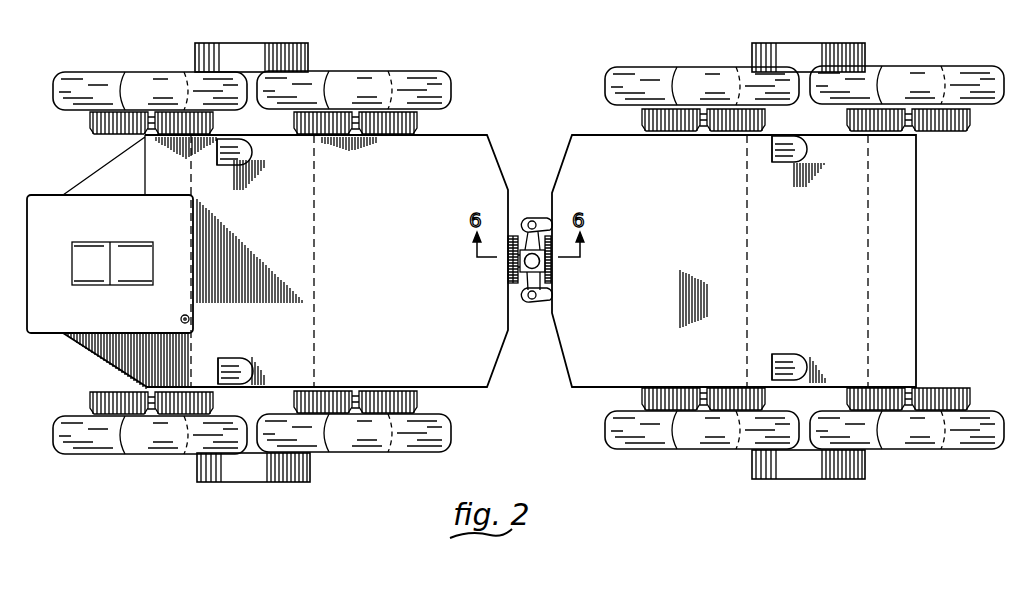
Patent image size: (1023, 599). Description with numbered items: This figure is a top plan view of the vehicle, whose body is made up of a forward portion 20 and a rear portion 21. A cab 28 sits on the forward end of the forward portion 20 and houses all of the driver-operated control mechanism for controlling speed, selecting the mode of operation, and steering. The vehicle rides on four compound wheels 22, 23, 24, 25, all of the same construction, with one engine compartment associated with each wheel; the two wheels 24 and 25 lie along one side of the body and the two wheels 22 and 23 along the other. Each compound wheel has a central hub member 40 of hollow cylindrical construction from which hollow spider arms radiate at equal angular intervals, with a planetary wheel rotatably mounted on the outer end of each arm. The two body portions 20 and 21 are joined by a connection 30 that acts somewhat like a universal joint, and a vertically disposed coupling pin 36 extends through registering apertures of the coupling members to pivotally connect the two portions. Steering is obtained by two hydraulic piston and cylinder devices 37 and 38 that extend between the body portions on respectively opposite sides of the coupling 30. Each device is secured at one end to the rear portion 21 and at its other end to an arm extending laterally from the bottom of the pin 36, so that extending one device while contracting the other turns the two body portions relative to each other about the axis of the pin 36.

The forward portion 20 is at (490, 122).
The rear portion 21 is at (582, 118).
The compound wheel 22 is at (60, 418).
The compound wheel 23 is at (617, 451).
The compound wheel 24 is at (62, 57).
The compound wheel 25 is at (643, 45).
The cab 28 is at (47, 180).
The connection 30 is at (531, 272).
The coupling pin 36 is at (520, 261).
The hydraulic piston and cylinder device 37 is at (547, 216).
The hydraulic piston and cylinder device 38 is at (547, 303).
The central hub member 40 is at (865, 468).